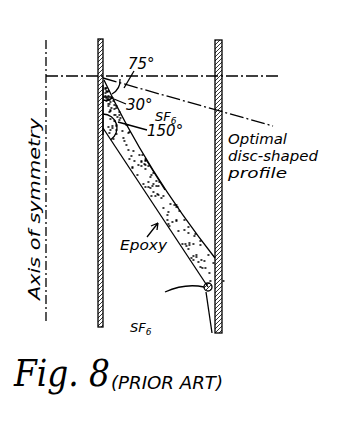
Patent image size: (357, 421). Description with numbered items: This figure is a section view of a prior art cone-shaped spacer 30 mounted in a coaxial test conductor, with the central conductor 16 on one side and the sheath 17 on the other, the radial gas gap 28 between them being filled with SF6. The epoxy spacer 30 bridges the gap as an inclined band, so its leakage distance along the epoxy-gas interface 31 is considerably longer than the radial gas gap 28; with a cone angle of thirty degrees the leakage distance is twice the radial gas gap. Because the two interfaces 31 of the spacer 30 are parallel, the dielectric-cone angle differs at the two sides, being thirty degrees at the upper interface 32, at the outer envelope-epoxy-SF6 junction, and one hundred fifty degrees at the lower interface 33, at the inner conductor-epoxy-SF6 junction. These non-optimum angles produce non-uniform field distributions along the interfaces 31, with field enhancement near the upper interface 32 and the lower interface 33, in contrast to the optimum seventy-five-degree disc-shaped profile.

The central conductor 16 is at (96, 295).
The sheath 17 is at (215, 61).
The radial gas gap 28 is at (153, 281).
The cone-shaped spacer 30 is at (163, 196).
The epoxy-gas interface 31 is at (153, 175).
The upper interface 32 is at (213, 263).
The lower interface 33 is at (98, 133).